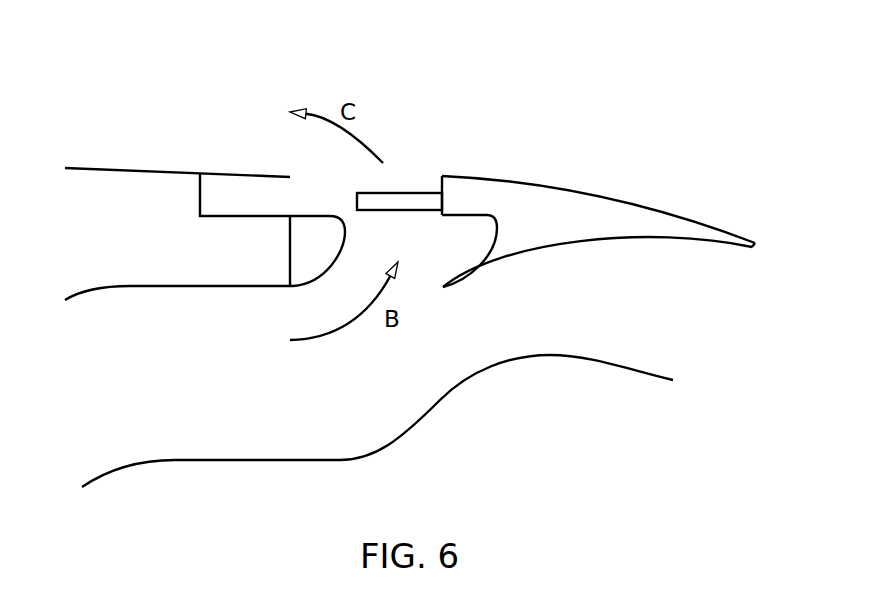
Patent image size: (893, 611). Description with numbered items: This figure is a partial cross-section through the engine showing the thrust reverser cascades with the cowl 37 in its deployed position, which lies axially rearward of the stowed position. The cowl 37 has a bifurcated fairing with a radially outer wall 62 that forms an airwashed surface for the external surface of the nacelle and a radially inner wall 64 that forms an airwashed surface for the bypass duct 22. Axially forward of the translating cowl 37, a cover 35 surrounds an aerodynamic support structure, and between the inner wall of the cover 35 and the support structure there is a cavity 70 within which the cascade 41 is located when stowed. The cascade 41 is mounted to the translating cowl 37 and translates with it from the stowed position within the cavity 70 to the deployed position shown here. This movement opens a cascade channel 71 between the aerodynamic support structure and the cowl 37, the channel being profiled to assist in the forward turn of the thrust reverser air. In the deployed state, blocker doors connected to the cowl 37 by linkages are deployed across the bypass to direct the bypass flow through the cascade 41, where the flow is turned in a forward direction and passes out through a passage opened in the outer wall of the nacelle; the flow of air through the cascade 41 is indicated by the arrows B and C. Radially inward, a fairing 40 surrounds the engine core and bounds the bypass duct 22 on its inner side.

The bypass duct 22 is at (156, 391).
The cover 35 is at (131, 142).
The cowl 37 is at (598, 193).
The fairing 40 is at (413, 429).
The cascade 41 is at (403, 200).
The radially outer wall 62 is at (646, 207).
The radially inner wall 64 is at (631, 234).
The cavity 70 is at (259, 209).
The cascade channel 71 is at (411, 239).